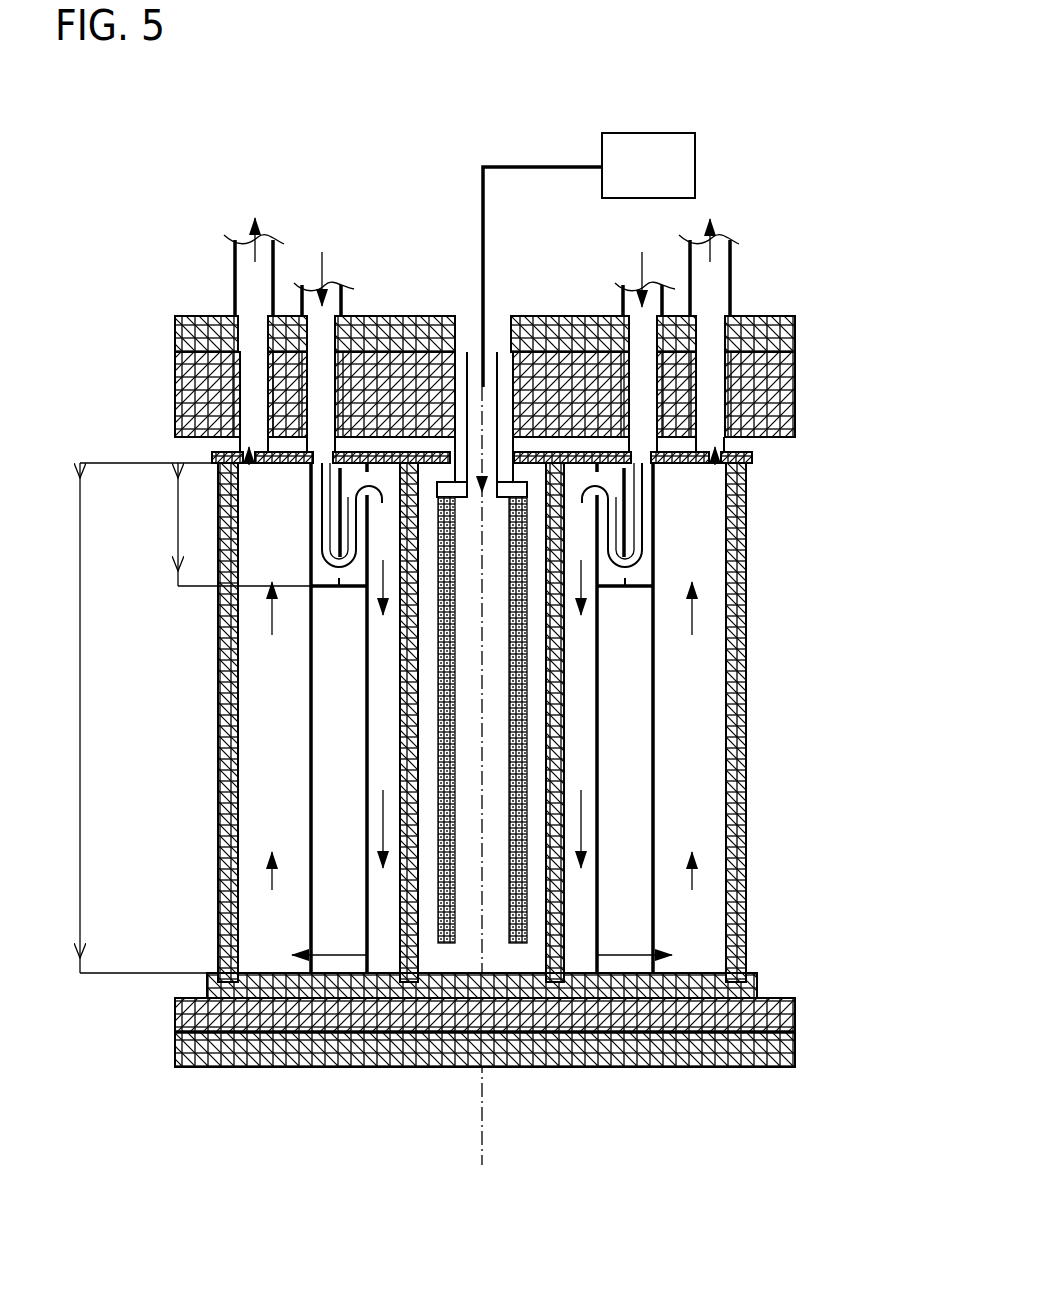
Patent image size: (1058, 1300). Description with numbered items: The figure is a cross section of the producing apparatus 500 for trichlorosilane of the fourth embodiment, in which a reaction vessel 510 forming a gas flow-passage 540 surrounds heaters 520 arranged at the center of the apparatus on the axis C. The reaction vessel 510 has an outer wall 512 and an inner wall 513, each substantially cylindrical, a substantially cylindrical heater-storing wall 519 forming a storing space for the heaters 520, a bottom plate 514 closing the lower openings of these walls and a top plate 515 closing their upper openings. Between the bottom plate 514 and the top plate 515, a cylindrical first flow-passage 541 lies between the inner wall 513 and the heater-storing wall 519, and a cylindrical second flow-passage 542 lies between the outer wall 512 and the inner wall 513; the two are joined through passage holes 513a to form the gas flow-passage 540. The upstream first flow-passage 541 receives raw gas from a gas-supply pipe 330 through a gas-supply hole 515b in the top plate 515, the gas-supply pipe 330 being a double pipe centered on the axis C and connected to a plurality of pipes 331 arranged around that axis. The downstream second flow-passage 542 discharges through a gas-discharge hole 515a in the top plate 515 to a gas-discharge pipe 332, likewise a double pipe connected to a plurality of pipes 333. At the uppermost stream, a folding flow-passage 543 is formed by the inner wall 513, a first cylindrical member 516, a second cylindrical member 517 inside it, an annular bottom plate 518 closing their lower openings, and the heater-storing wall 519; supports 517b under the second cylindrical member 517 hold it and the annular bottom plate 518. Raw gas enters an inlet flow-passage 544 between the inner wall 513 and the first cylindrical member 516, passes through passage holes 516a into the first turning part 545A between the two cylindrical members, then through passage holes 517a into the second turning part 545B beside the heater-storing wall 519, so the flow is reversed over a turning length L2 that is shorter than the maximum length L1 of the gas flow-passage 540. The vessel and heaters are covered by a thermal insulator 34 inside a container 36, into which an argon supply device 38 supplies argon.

The producing apparatus 500 is at (272, 196).
The argon supply device 38 is at (623, 155).
The first turning part 545A is at (345, 482).
The second turning part 545B is at (392, 508).
The pipes 331 is at (622, 292).
The gas-supply pipe 330 is at (624, 470).
The gas-supply hole 515b is at (632, 457).
The pipes 333 is at (733, 296).
The inlet flow-passage 544 is at (311, 497).
The gas-discharge pipe 332 is at (730, 393).
The gas-discharge hole 515a is at (733, 427).
The top plate 515 is at (747, 456).
The passage holes 517a is at (597, 482).
The first cylindrical member 516 is at (627, 530).
The second cylindrical member 517 is at (598, 548).
The passage holes 516a is at (625, 588).
The annular bottom plate 518 is at (762, 669).
The reaction vessel 510 is at (772, 692).
The outer wall 512 is at (737, 797).
The inner wall 513 is at (745, 812).
The passage holes 513a is at (655, 950).
The bottom plate 514 is at (760, 994).
The folding flow-passage 543 is at (333, 594).
The supports 517b is at (311, 738).
The thermal insulator 34 is at (273, 1013).
The container 36 is at (322, 1057).
The heaters 520 is at (443, 927).
The heater-storing wall 519 is at (517, 927).
The first flow-passage 541 is at (583, 955).
The second flow-passage 542 is at (698, 958).
The gas flow-passage 540 is at (750, 1113).
The axis C is at (482, 1125).
The maximum length L1 is at (147, 718).
The turning length L2 is at (226, 524).